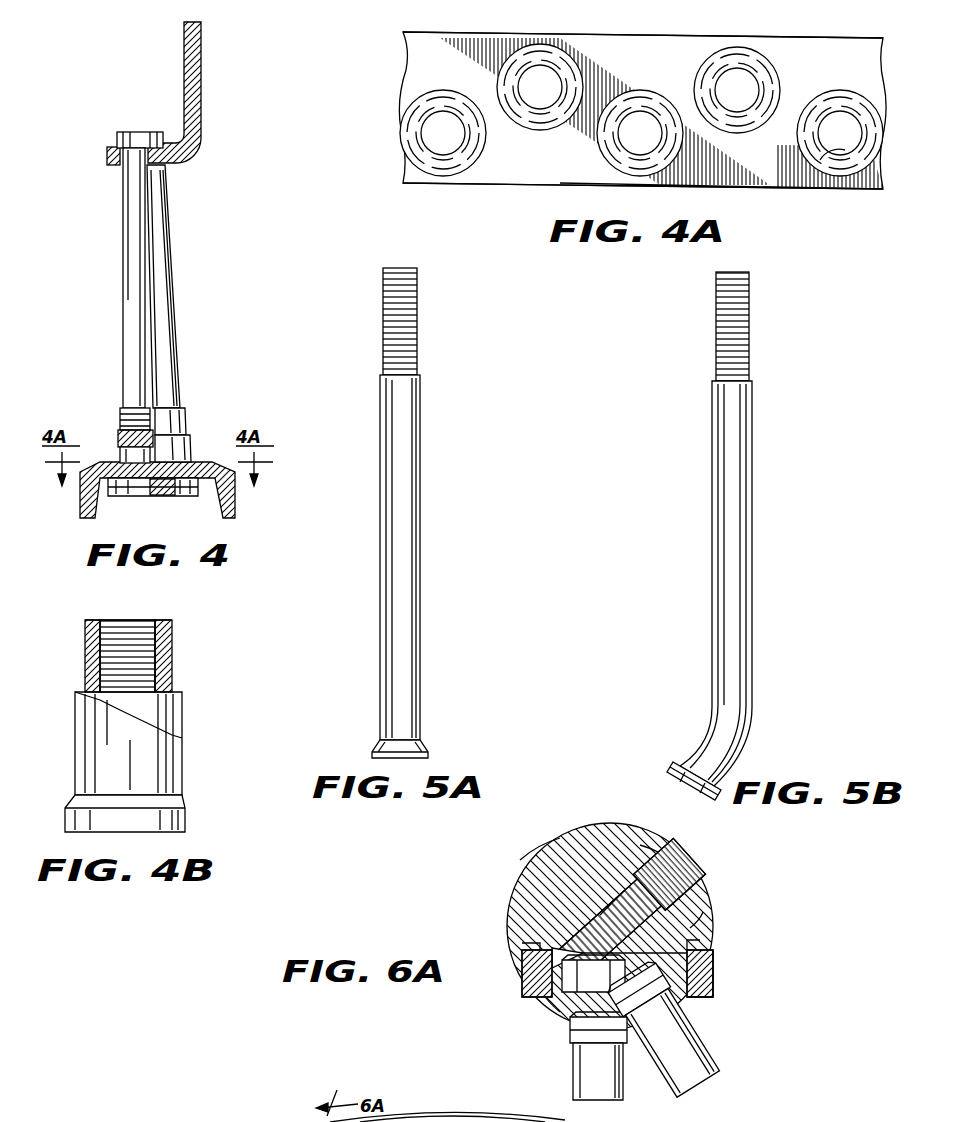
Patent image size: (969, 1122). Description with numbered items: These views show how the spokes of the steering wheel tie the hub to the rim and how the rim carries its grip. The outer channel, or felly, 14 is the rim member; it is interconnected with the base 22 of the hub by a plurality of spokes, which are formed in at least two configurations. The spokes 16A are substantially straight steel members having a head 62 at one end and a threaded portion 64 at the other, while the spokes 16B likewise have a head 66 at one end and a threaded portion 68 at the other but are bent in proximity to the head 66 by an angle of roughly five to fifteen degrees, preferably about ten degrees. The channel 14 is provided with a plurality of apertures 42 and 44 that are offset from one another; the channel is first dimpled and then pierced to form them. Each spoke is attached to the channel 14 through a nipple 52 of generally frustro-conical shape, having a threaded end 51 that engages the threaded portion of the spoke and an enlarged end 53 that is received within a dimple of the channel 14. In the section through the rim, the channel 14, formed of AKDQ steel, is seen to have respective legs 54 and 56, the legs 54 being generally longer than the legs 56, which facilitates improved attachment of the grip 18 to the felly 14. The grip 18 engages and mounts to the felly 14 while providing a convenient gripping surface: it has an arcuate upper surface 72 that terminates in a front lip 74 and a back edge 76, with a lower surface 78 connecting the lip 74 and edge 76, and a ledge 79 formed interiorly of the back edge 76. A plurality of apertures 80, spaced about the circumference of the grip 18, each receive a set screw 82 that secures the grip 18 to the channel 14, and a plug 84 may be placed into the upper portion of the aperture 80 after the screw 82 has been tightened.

In FIG. 4, the outer channel 14 is at (216, 466).
In FIG. 4A, the outer channel 14 is at (842, 54).
In FIG. 6A, the outer channel 14 is at (518, 1002).
In FIG. 4, the spoke 16A is at (122, 304).
In FIG. 5A, the spoke 16A is at (415, 513).
In FIG. 6A, the spoke 16A is at (602, 947).
In FIG. 4, the spoke 16B is at (172, 304).
In FIG. 5B, the spoke 16B is at (733, 536).
In FIG. 6A, the spoke 16B is at (718, 1062).
In FIG. 6A, the grip 18 is at (690, 892).
In FIG. 4, the base 22 is at (203, 160).
In FIG. 4A, the aperture 42 is at (748, 84).
In FIG. 4A, the aperture 44 is at (830, 155).
In FIG. 4B, the threaded end 51 is at (140, 630).
In FIG. 4B, the nipple 52 is at (190, 735).
In FIG. 4, the enlarged end 53 is at (118, 442).
In FIG. 4B, the enlarged end 53 is at (72, 818).
In FIG. 6A, the enlarged end 53 is at (628, 1085).
In FIG. 6A, the leg 54 is at (528, 988).
In FIG. 6A, the leg 56 is at (712, 984).
In FIG. 5A, the head 62 is at (378, 742).
In FIG. 5A, the threaded portion 64 is at (420, 334).
In FIG. 5B, the head 66 is at (675, 766).
In FIG. 5B, the threaded portion 68 is at (750, 336).
In FIG. 6A, the upper surface 72 is at (546, 840).
In FIG. 6A, the front lip 74 is at (522, 946).
In FIG. 6A, the back edge 76 is at (702, 950).
In FIG. 6A, the lower surface 78 is at (650, 848).
In FIG. 6A, the ledge 79 is at (704, 914).
In FIG. 6A, the aperture 80 is at (628, 922).
In FIG. 6A, the set screw 82 is at (618, 886).
In FIG. 6A, the plug 84 is at (684, 858).